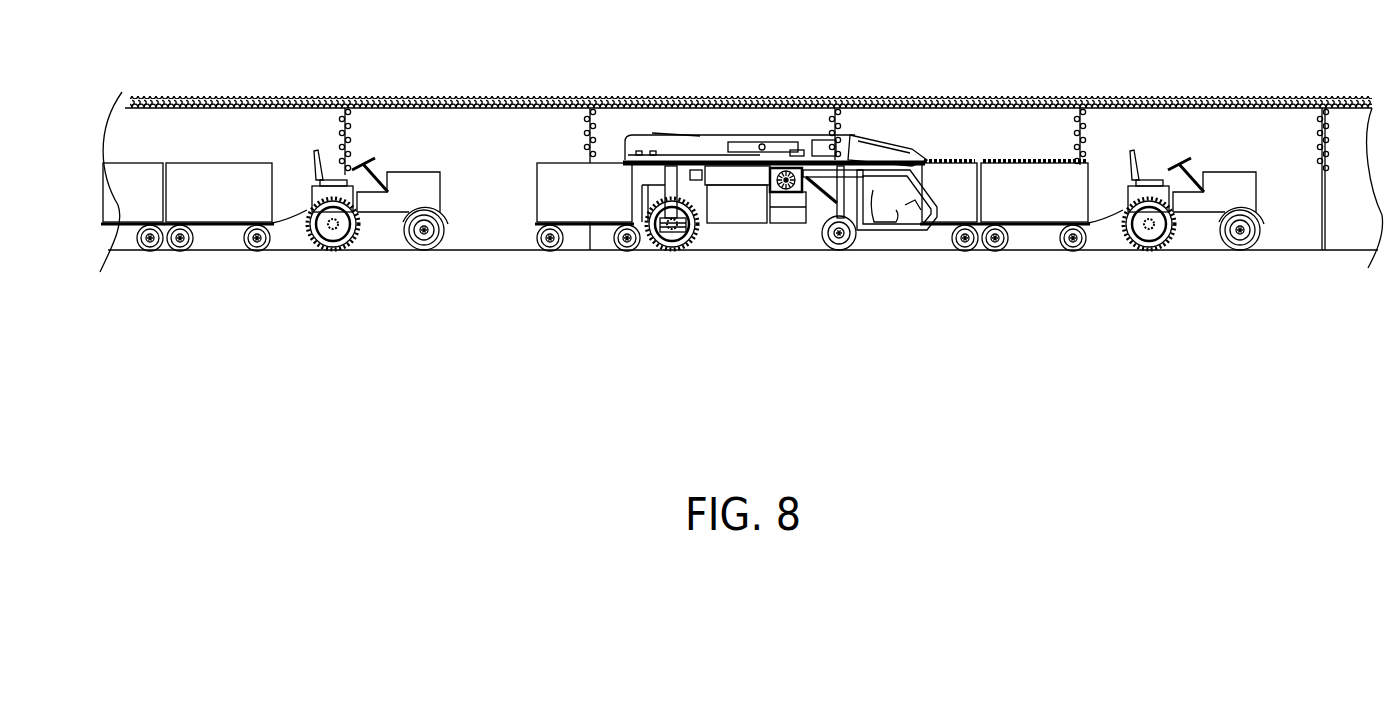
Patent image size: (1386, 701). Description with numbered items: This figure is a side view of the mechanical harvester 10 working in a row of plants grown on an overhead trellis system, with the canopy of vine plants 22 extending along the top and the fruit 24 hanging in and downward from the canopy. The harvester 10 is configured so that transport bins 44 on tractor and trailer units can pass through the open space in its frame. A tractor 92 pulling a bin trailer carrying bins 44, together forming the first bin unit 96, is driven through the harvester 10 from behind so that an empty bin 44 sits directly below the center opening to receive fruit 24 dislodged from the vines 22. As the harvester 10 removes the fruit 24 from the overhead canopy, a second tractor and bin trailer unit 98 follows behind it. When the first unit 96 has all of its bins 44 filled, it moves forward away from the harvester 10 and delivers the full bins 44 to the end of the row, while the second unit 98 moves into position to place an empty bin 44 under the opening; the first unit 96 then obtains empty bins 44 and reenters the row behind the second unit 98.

The mechanical harvester 10 is at (752, 137).
The vine plants 22 is at (541, 90).
The fruit 24 is at (1037, 155).
The transport bin 44 is at (137, 183).
The tractor 92 is at (410, 178).
The first bin unit 96 is at (970, 148).
The second tractor and bin trailer unit 98 is at (240, 142).